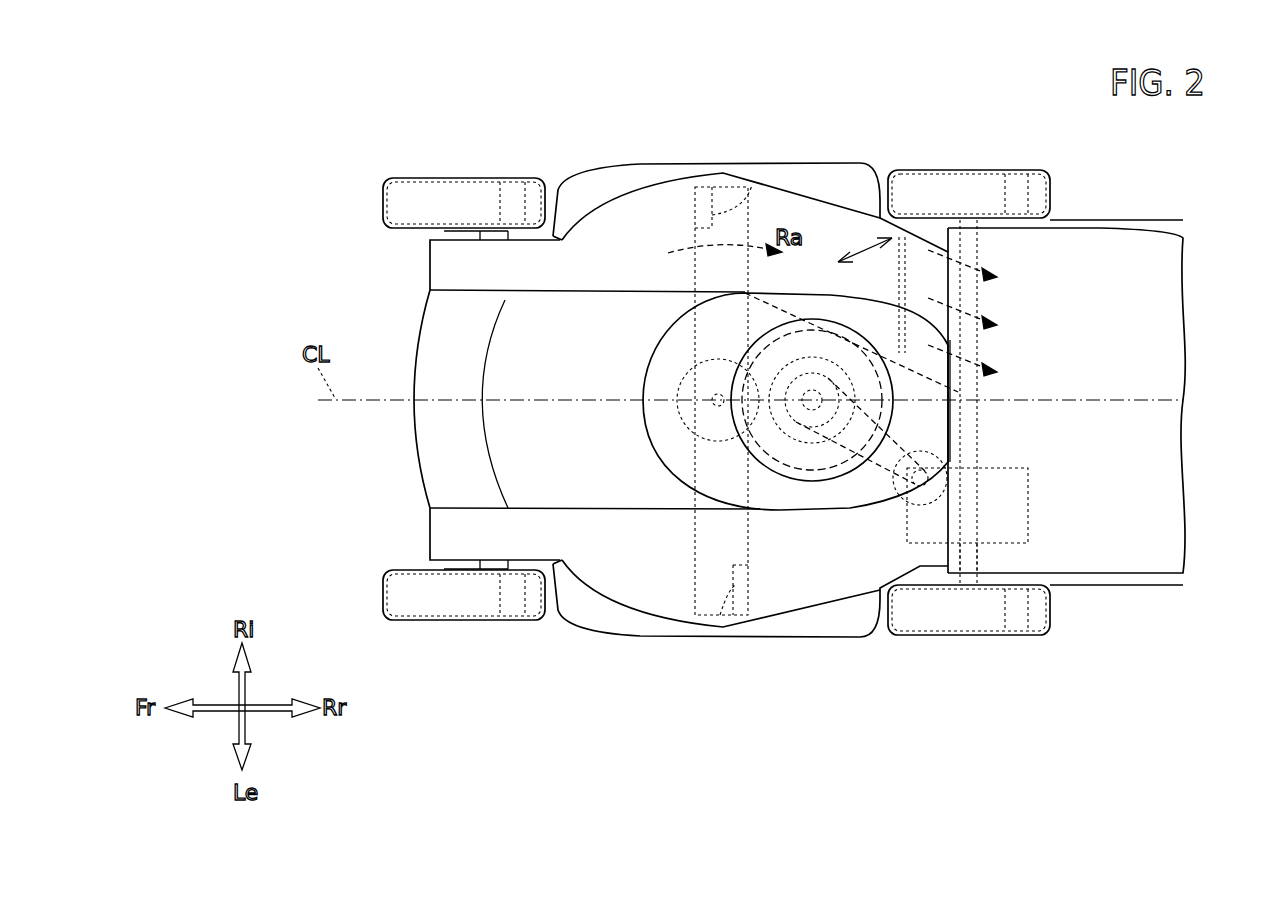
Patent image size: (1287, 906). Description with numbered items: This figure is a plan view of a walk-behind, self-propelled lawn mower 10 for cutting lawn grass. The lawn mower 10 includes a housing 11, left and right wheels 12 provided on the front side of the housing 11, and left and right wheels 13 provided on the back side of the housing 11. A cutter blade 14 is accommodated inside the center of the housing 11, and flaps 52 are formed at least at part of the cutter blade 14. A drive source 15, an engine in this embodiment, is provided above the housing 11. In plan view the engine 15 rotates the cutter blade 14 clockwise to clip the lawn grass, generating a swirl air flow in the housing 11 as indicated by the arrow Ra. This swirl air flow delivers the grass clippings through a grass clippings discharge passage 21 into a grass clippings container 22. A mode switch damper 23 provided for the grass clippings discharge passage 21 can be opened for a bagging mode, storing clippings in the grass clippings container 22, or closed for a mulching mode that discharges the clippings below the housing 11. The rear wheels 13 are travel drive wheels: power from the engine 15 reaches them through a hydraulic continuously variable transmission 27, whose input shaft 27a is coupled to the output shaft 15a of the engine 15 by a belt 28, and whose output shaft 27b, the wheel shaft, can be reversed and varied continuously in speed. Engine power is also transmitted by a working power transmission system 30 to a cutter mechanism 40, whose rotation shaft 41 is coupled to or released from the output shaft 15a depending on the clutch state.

The lawn mower 10 is at (310, 145).
The housing 11 is at (437, 445).
The left and right wheels 12 is at (400, 201).
The left and right wheels 13 is at (960, 186).
The cutter blade 14 is at (725, 187).
The drive source 15 is at (817, 482).
The output shaft 15a is at (812, 470).
The grass clippings discharge passage 21 is at (962, 392).
The grass clippings container 22 is at (1152, 318).
The mode switch damper 23 is at (903, 292).
The transmission 27 is at (1030, 505).
The input shaft 27a is at (928, 470).
The output shaft 27b is at (975, 562).
The belt 28 is at (952, 422).
The working power transmission system 30 is at (688, 373).
The cutter mechanism 40 is at (683, 443).
The rotation shaft 41 is at (720, 395).
The flaps 52 is at (765, 185).